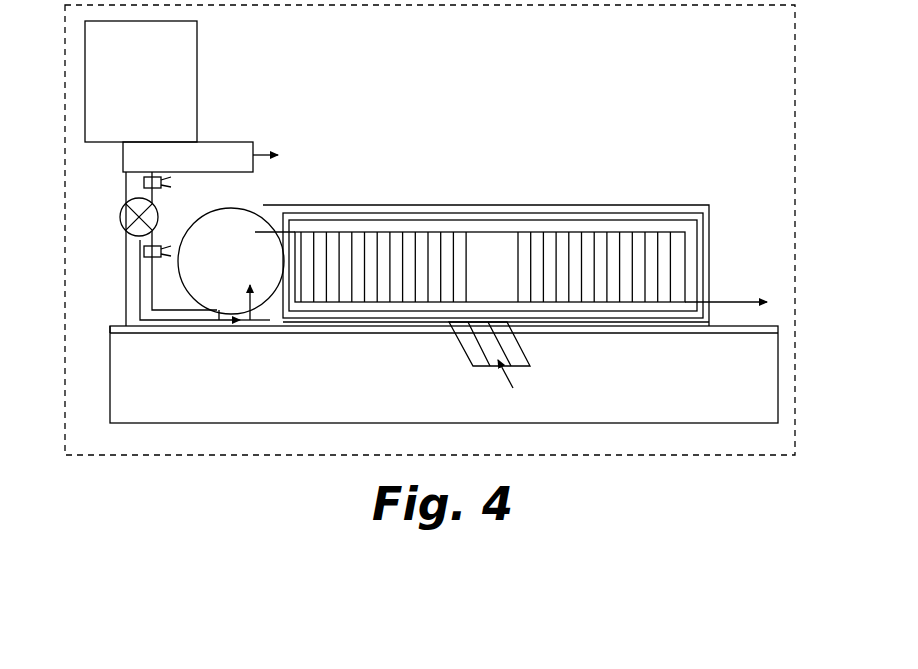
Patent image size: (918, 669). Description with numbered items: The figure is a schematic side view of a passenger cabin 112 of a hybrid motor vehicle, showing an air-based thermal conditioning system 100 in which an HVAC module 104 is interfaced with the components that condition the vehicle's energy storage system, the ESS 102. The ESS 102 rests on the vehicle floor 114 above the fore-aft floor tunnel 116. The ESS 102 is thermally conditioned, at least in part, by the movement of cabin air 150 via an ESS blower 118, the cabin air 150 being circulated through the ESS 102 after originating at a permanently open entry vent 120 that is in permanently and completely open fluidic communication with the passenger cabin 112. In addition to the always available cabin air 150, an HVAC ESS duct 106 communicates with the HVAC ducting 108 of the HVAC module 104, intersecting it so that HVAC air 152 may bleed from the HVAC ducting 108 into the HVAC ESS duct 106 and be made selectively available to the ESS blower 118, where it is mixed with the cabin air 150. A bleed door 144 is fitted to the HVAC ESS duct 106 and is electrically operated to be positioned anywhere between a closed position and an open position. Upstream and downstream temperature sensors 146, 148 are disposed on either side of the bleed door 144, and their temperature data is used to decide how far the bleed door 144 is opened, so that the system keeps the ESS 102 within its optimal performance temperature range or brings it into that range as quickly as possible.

The cooling system 100 is at (390, 139).
The ESS 102 is at (455, 213).
The HVAC module 104 is at (197, 50).
The HVAC ESS duct 106 is at (126, 257).
The HVAC ducting 108 is at (232, 142).
The passenger cabin 112 is at (174, 463).
The vehicle floor 114 is at (122, 326).
The fore-aft floor tunnel 116 is at (704, 383).
The ESS blower 118 is at (243, 208).
The permanently open entry vent 120 is at (522, 349).
The bleed door 144 is at (119, 217).
The upstream temperature sensor 146 is at (163, 181).
The downstream temperature sensor 148 is at (154, 246).
The cabin air 150 is at (632, 106).
The HVAC air 152 is at (258, 152).